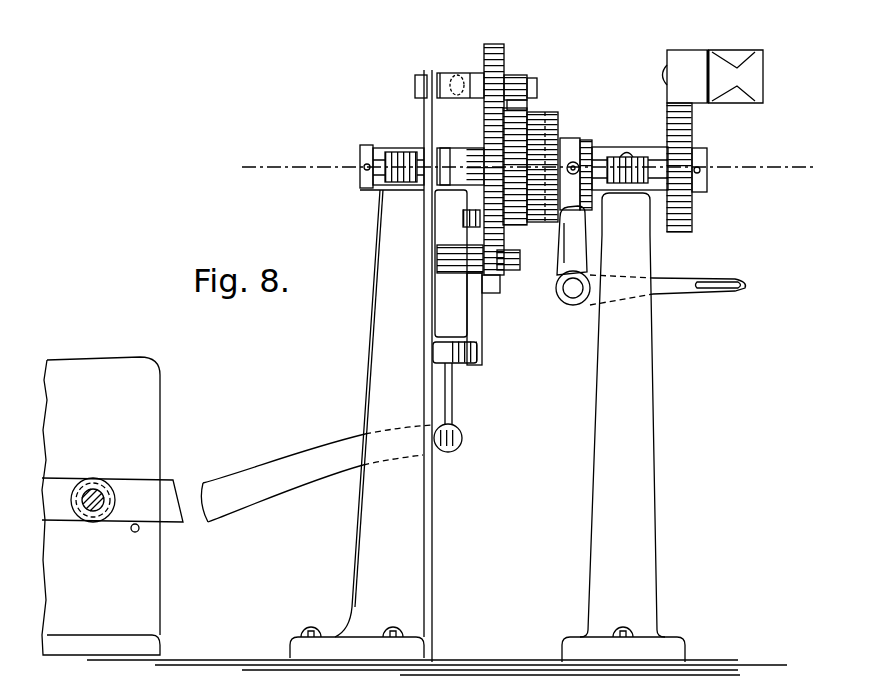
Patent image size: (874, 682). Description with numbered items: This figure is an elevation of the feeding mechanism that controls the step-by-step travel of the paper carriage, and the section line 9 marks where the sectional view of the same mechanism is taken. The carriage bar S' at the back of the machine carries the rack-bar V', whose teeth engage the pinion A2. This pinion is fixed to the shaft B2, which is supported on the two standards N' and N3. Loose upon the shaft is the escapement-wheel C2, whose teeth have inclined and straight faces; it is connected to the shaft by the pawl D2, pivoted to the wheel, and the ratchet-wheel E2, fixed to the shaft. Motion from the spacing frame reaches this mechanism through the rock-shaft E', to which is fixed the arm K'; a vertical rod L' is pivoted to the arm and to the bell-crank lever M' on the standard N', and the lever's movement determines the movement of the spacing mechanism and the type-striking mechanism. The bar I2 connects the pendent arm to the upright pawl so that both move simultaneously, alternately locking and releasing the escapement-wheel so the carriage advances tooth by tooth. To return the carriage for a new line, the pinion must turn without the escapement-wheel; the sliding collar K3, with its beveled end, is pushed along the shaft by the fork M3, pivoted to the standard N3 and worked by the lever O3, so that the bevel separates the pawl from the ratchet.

The section line 9 9 is at (529, 174).
The escapement-wheel C2 is at (504, 52).
The pawl D2 is at (537, 83).
The sliding collar K3 is at (551, 166).
The ratchet-wheel E2 is at (527, 250).
The bar I2 is at (463, 216).
The bell-crank lever M' is at (473, 277).
The vertical rod L' is at (457, 397).
The fork M3 is at (585, 255).
The lever O3 is at (668, 276).
The standard N' is at (357, 364).
The standard N3 is at (623, 427).
The arm K' is at (317, 473).
The rock-shaft E' is at (112, 506).
The rack-bar V' is at (686, 63).
The bar S' is at (755, 76).
The pinion A2 is at (692, 128).
The shaft B2 is at (707, 152).